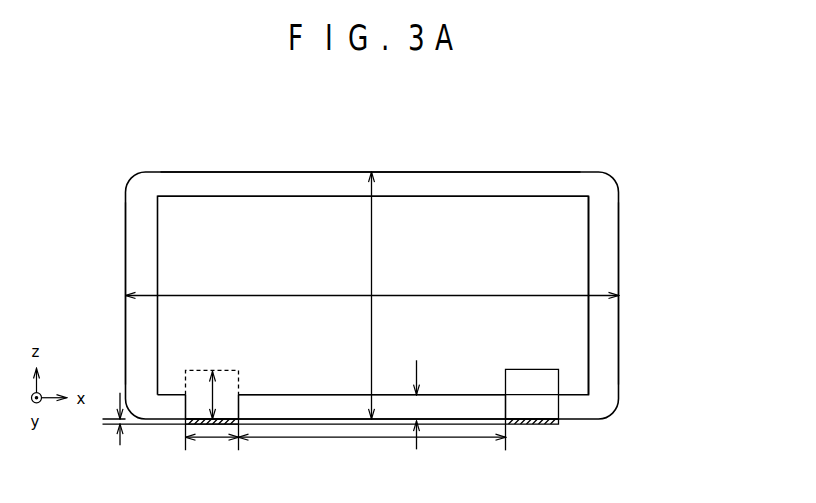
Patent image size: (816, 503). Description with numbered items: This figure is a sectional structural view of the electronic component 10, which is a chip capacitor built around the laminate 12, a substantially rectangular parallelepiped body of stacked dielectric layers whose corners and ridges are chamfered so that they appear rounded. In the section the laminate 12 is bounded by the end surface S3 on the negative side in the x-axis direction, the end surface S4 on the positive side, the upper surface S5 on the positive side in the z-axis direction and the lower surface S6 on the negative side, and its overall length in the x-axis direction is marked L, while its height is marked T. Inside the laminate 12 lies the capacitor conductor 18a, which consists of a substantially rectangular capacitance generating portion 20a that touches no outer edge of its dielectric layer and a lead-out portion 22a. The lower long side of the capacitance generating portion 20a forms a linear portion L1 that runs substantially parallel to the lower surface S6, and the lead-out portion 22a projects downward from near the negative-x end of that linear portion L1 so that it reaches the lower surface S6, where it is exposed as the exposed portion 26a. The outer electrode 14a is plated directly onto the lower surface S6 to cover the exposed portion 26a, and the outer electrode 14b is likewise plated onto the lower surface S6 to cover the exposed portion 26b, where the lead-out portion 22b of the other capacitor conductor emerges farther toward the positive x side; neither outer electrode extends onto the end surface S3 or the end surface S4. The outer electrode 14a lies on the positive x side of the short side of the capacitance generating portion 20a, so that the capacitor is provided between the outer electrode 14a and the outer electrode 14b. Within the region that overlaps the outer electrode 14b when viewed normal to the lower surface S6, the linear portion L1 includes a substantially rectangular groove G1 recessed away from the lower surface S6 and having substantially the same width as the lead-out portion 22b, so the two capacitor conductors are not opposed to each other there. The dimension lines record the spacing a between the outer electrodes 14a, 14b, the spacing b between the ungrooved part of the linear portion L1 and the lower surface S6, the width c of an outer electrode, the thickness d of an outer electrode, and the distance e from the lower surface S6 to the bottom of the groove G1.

The electronic component 10 is at (128, 99).
The laminate 12 is at (292, 170).
The outer electrode 14a is at (212, 415).
The outer electrode 14b is at (531, 420).
The capacitor conductor 18a is at (397, 205).
The capacitance generating portion 20a is at (545, 277).
The lead-out portion 22a is at (218, 406).
The lead-out portion 22b is at (524, 407).
The exposed portion 26a is at (206, 414).
The exposed portion 26b is at (521, 420).
The end surface S3 is at (125, 262).
The end surface S4 is at (620, 337).
The upper surface S5 is at (371, 170).
The lower surface S6 is at (337, 419).
The length of the electronic component L is at (372, 279).
The thickness dimension T is at (385, 295).
The linear portion L1 is at (335, 389).
The spacing between the outer electrodes a is at (372, 441).
The spacing between the linear portion and the lower surface b is at (427, 404).
The width of the outer electrode c is at (212, 440).
The thickness of the outer electrode d is at (109, 425).
The distance from the lower surface to the bottom of the groove e is at (221, 395).
The groove G1 is at (547, 387).